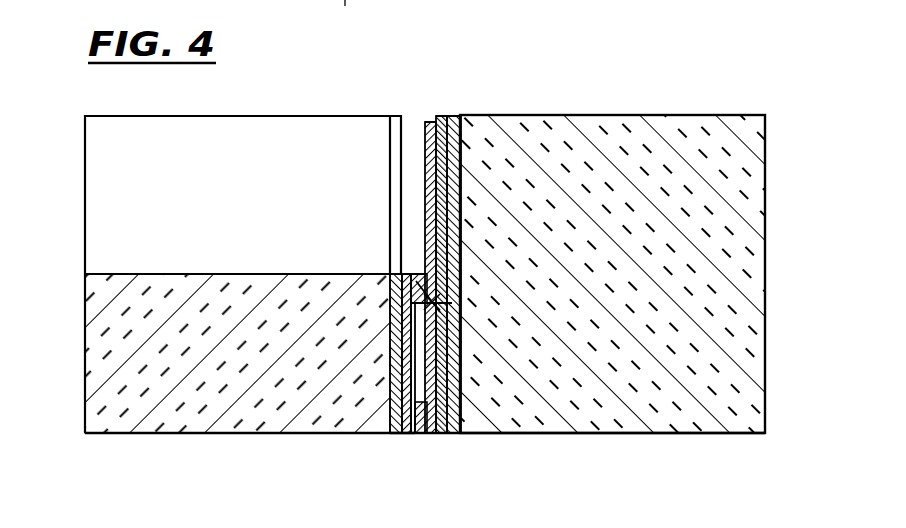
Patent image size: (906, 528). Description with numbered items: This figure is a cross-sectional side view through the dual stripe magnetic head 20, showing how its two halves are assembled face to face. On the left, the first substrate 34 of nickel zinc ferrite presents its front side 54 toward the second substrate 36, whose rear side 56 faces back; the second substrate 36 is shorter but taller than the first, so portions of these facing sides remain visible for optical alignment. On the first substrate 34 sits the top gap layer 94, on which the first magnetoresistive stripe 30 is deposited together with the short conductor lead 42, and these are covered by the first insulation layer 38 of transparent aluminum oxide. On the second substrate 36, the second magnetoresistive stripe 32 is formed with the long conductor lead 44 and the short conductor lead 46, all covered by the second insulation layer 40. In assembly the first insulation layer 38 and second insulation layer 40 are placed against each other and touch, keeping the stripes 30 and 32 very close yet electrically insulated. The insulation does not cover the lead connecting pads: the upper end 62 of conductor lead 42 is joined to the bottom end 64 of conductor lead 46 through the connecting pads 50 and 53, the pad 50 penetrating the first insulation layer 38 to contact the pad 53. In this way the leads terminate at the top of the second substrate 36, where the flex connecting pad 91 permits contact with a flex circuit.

The dual stripe magnetic head 20 is at (735, 72).
The first magnetoresistive stripe 30 is at (403, 436).
The second magnetoresistive stripe 32 is at (442, 436).
The first substrate 34 is at (96, 327).
The second substrate 36 is at (745, 170).
The first insulation layer 38 is at (418, 436).
The second insulation layer 40 is at (460, 358).
The short conductor lead 42 is at (403, 436).
The long conductor lead 44 is at (442, 436).
The short conductor lead 46 is at (440, 164).
The connecting pad 50 is at (417, 276).
The connecting pad 53 is at (426, 272).
The front side 54 is at (392, 382).
The rear side 56 is at (446, 118).
The upper end 62 is at (402, 280).
The bottom end 64 is at (450, 314).
The flex connecting pad 91 is at (430, 140).
The top gap layer 94 is at (426, 128).